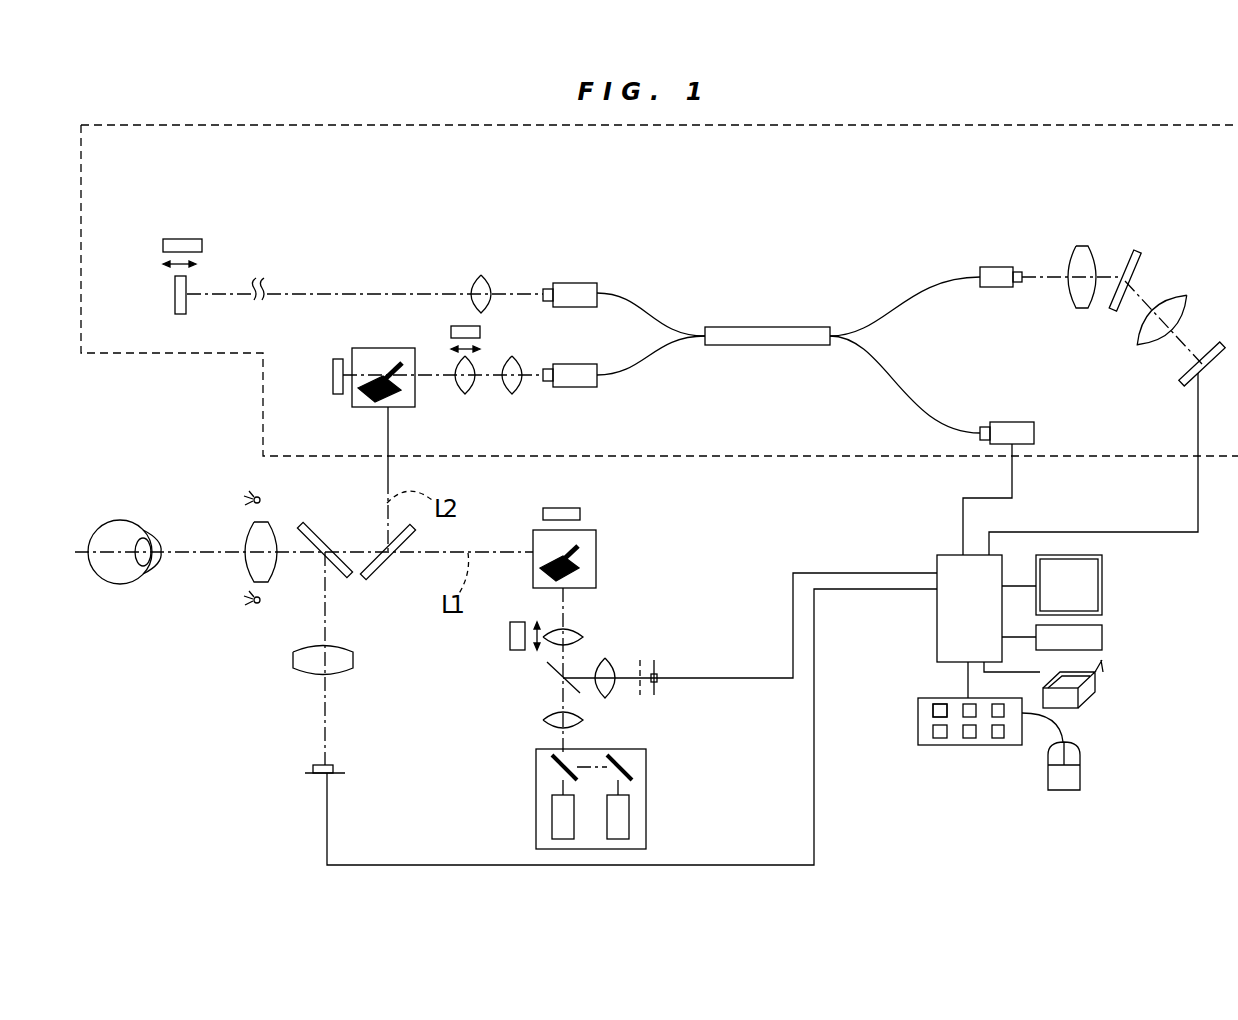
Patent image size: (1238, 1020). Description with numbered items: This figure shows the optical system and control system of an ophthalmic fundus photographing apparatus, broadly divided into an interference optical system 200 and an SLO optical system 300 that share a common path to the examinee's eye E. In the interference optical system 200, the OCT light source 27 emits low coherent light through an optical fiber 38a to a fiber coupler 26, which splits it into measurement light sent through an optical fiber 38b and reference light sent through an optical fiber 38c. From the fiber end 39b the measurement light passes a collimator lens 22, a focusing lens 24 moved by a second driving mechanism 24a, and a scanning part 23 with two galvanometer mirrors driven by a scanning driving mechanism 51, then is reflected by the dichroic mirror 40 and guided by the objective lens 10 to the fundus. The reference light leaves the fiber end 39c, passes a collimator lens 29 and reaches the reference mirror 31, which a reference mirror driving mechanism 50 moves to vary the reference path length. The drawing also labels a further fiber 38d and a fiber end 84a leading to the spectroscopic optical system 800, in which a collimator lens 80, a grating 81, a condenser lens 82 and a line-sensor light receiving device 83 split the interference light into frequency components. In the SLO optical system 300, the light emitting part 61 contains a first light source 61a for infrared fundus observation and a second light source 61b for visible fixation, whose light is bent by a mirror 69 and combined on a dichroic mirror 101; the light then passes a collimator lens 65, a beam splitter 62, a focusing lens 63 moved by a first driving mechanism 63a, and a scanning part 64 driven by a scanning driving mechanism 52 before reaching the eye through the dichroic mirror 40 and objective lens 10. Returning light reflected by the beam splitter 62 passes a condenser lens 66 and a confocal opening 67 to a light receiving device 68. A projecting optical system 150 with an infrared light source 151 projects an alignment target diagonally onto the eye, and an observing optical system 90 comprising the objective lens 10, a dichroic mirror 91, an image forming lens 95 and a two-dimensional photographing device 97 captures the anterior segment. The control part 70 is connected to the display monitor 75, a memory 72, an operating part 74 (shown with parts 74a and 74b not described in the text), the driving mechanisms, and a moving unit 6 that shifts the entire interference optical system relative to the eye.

The examinee's eye E is at (118, 578).
The moving unit 6 is at (1096, 686).
The objective lens 10 is at (253, 536).
The collimator lens 22 is at (512, 390).
The scanning part 23 is at (371, 348).
The focusing lens 24 is at (463, 390).
The second driving mechanism 24a is at (474, 332).
The fiber coupler 26 is at (760, 332).
The OCT light source 27 is at (1000, 430).
The collimator lens 29 is at (479, 278).
The reference mirror 31 is at (178, 294).
The optical fiber 38a is at (914, 398).
The optical fiber 38b is at (648, 362).
The optical fiber 38c is at (650, 305).
The optical fiber 38d is at (903, 290).
The end of optical fiber 39b is at (547, 382).
The end of optical fiber 39c is at (546, 289).
The dichroic mirror 40 is at (388, 560).
The reference mirror driving mechanism 50 is at (183, 240).
The scanning driving mechanism 51 is at (333, 375).
The scanning driving mechanism 52 is at (575, 512).
The light emitting part 61 is at (646, 798).
The first light source 61a is at (552, 826).
The second light source 61b is at (629, 826).
The beam splitter 62 is at (553, 675).
The focusing lens 63 is at (574, 626).
The first driving mechanism 63a is at (509, 636).
The scanning part 64 is at (590, 570).
The collimator lens 65 is at (545, 720).
The condenser lens 66 is at (602, 662).
The confocal opening 67 is at (640, 662).
The light receiving device 68 is at (658, 663).
The mirror 69 is at (631, 764).
The control part 70 is at (937, 623).
The memory 72 is at (1102, 637).
The operating part 74 is at (903, 731).
The mouse 74a is at (1080, 777).
The keyboard switch 74b is at (938, 710).
The display monitor 75 is at (1102, 581).
The collimator lens 80 is at (1084, 255).
The grating 81 is at (1131, 268).
The condenser lens 82 is at (1143, 336).
The light receiving device 83 is at (1186, 378).
The fiber end 84a is at (1015, 272).
The observing optical system 90 is at (270, 695).
The dichroic mirror 91 is at (312, 528).
The image forming lens 95 is at (350, 668).
The two-dimensional photographing device 97 is at (340, 775).
The dichroic mirror 101 is at (553, 764).
The projecting optical system 150 is at (228, 486).
The infrared light source 151 is at (261, 497).
The interference optical system 200 is at (185, 353).
The SLO optical system 300 is at (712, 548).
The spectroscopic optical system 800 is at (1210, 263).